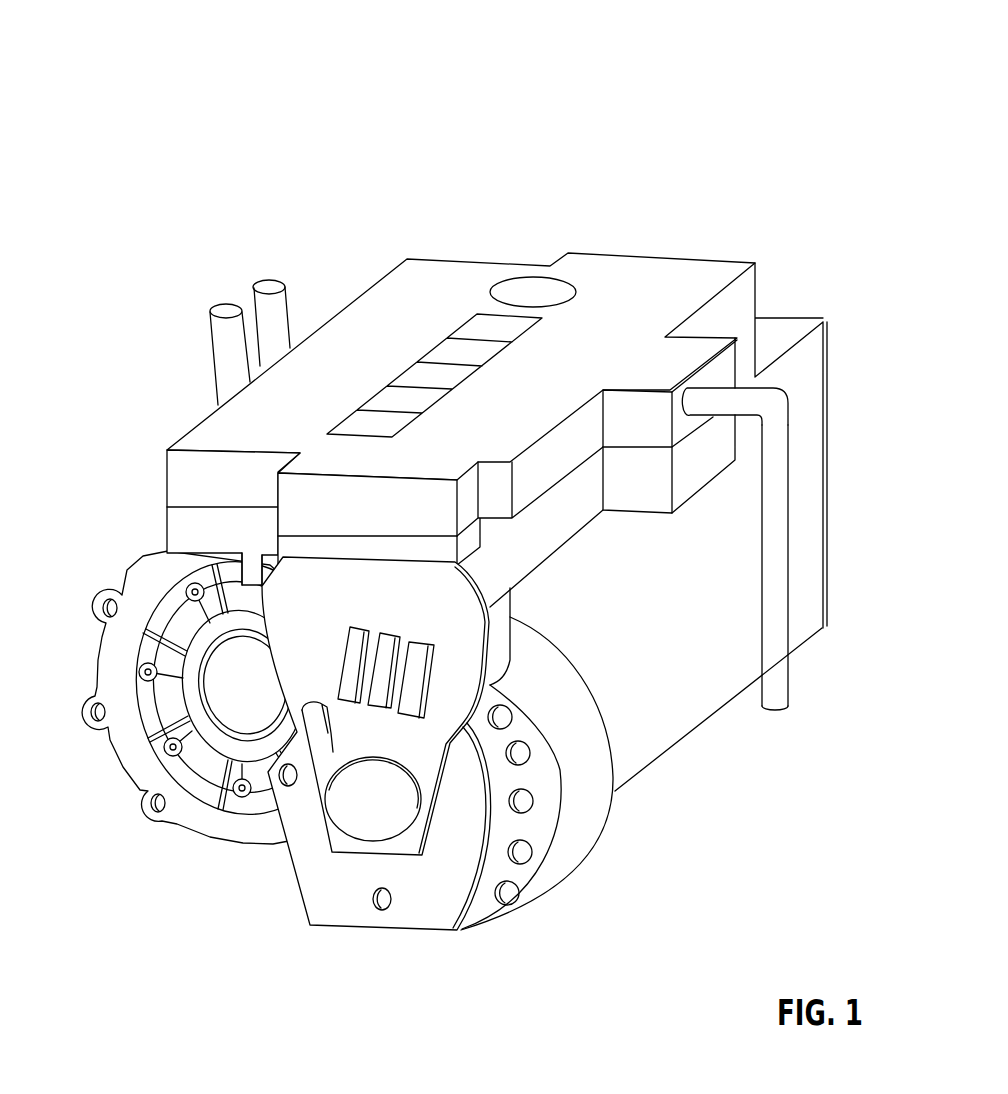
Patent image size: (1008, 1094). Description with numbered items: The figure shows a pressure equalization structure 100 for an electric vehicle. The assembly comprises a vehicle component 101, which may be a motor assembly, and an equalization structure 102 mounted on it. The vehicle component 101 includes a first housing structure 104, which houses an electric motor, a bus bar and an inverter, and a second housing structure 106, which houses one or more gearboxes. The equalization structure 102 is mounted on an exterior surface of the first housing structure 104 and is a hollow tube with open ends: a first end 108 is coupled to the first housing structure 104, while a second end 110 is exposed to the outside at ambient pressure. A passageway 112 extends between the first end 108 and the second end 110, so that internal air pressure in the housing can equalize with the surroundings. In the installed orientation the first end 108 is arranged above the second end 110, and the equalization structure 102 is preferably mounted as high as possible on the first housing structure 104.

The pressure equalization structure 100 is at (135, 34).
The vehicle component 101 is at (584, 162).
The equalization structure 102 is at (773, 403).
The first housing structure 104 is at (448, 356).
The second housing structure 106 is at (127, 582).
The first end 108 is at (708, 403).
The second end 110 is at (778, 704).
The passageway 112 is at (776, 748).